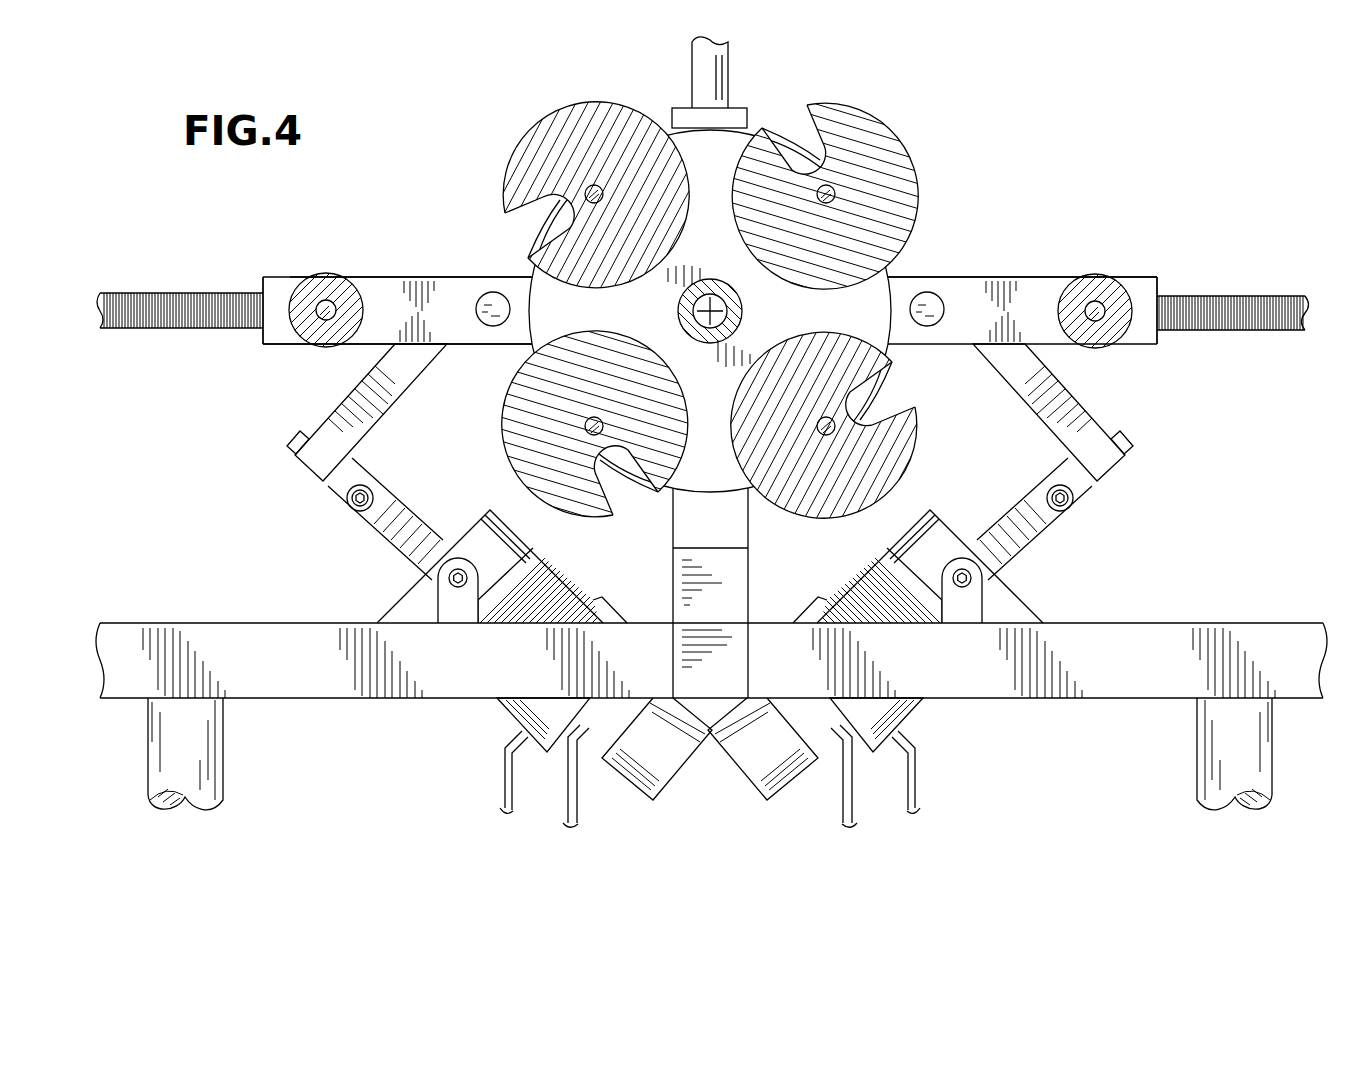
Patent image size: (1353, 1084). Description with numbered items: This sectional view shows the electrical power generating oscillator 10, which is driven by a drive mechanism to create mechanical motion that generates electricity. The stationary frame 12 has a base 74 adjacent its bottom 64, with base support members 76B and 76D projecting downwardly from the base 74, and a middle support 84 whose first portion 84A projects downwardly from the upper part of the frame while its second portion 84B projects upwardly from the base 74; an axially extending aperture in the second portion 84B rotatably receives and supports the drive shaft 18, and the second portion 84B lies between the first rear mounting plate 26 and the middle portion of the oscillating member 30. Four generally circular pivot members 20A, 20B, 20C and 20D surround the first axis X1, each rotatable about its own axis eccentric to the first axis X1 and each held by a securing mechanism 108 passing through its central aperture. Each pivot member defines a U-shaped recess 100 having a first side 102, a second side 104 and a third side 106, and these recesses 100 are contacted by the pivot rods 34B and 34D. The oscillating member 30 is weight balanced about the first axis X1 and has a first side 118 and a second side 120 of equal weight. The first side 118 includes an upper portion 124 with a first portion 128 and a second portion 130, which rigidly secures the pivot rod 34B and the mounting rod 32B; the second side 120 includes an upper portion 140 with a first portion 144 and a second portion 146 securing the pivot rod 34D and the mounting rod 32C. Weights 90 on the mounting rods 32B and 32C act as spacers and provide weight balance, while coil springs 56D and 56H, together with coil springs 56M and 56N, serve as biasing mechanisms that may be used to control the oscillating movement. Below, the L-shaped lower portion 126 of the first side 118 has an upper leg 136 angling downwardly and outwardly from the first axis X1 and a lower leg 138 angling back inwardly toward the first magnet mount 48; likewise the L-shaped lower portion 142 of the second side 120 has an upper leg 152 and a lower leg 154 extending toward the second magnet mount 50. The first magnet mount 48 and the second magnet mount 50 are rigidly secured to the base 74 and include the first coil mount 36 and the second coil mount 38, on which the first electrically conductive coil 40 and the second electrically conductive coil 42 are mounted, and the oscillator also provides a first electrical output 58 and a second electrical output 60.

The electrical power generating oscillator 10 is at (1062, 135).
The frame 12 is at (215, 618).
The drive shaft 18 is at (725, 272).
The first axis X1 is at (722, 300).
The pivot member 20A is at (517, 129).
The pivot member 20B is at (911, 147).
The pivot member 20C is at (920, 458).
The pivot member 20D is at (503, 459).
The first rear mounting plate 26 is at (710, 126).
The oscillating member 30 is at (397, 274).
The upper portion 124 is at (427, 266).
The first portion 128 is at (401, 283).
The first side 118 is at (256, 272).
The second portion 130 is at (262, 333).
The mounting rod 32B is at (326, 300).
The mounting rod 32C is at (1096, 303).
The pivot rod 34B is at (489, 326).
The pivot rod 34D is at (928, 323).
The first coil mount 36 is at (580, 572).
The second coil mount 38 is at (843, 572).
The first electrically conductive coil 40 is at (583, 596).
The second electrically conductive coil 42 is at (837, 596).
The first magnet mount 48 is at (436, 597).
The second magnet mount 50 is at (986, 597).
The coil spring 56D is at (158, 292).
The coil spring 56H is at (1265, 295).
The coil spring 56M is at (440, 536).
The coil spring 56N is at (980, 536).
The first electrical output 58 is at (503, 792).
The second electrical output 60 is at (842, 808).
The bottom 64 is at (1003, 737).
The base 74 is at (268, 635).
The second base support member 76B is at (225, 743).
The fourth base support member 76D is at (1195, 752).
The middle support 84 is at (723, 653).
The first portion 84A is at (692, 58).
The second portion 84B is at (727, 523).
The weights 90 is at (358, 305).
The U-shaped recess 100 is at (824, 139).
The first side 102 is at (788, 158).
The second side 104 is at (788, 86).
The third side 106 is at (800, 168).
The securing mechanisms 108 is at (589, 192).
The second side 120 is at (1176, 278).
The L-shaped lower portion 126 is at (322, 413).
The upper leg 136 is at (376, 373).
The lower leg 138 is at (392, 542).
The upper portion 140 is at (1013, 270).
The L-shaped lower portion 142 is at (1099, 420).
The first portion 144 is at (960, 290).
The second portion 146 is at (1157, 338).
The upper leg 152 is at (1050, 379).
The lower leg 154 is at (1028, 541).